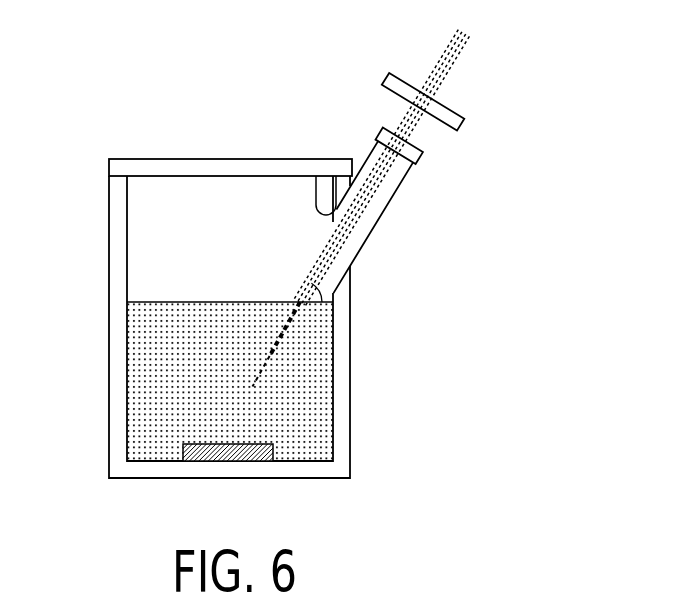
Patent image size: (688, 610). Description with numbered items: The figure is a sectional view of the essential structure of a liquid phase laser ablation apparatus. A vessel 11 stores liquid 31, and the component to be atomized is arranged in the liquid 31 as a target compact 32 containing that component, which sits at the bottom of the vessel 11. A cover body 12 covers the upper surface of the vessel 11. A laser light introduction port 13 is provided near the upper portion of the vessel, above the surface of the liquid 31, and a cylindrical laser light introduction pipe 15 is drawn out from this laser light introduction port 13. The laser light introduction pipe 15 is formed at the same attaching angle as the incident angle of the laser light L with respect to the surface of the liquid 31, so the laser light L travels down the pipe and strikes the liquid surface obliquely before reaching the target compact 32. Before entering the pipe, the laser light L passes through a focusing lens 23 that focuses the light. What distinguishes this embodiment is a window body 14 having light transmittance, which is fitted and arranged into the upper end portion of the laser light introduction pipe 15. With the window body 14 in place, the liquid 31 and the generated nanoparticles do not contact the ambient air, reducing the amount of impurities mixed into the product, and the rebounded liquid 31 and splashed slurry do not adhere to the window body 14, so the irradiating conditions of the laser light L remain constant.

The vessel 11 is at (108, 328).
The cover body 12 is at (218, 158).
The laser light introduction port 13 is at (316, 176).
The window body 14 is at (380, 135).
The laser light introduction pipe 15 is at (372, 230).
The focusing lens 23 is at (450, 108).
The liquid 31 is at (242, 422).
The target compact 32 is at (232, 462).
The laser light L is at (447, 51).